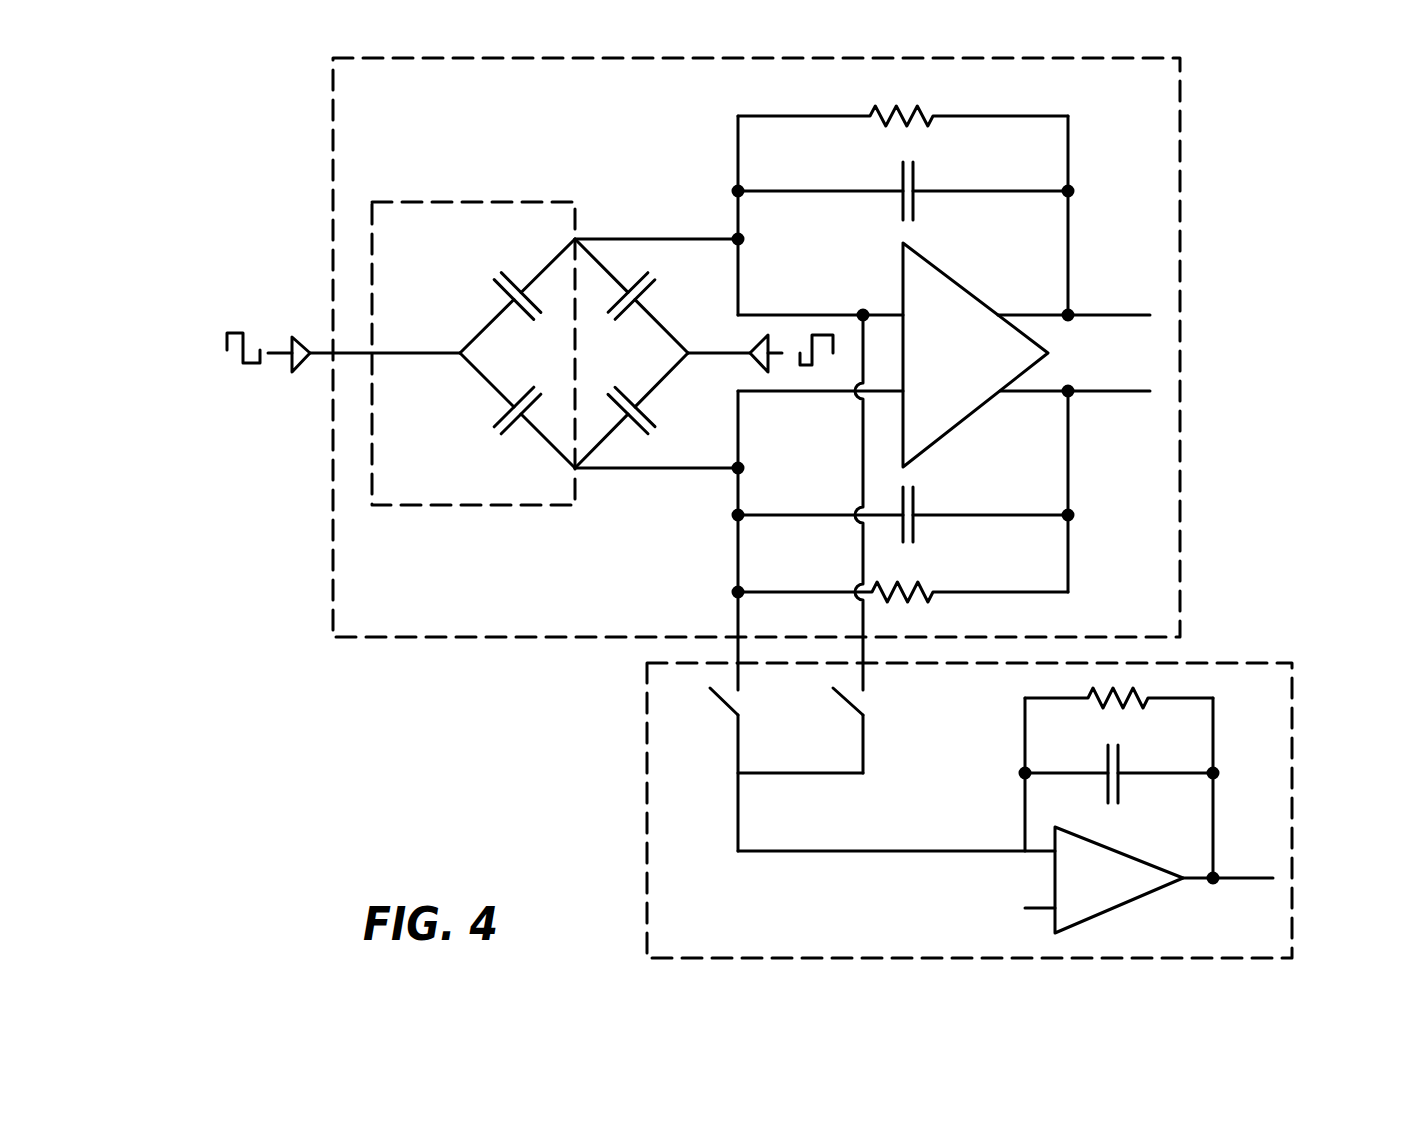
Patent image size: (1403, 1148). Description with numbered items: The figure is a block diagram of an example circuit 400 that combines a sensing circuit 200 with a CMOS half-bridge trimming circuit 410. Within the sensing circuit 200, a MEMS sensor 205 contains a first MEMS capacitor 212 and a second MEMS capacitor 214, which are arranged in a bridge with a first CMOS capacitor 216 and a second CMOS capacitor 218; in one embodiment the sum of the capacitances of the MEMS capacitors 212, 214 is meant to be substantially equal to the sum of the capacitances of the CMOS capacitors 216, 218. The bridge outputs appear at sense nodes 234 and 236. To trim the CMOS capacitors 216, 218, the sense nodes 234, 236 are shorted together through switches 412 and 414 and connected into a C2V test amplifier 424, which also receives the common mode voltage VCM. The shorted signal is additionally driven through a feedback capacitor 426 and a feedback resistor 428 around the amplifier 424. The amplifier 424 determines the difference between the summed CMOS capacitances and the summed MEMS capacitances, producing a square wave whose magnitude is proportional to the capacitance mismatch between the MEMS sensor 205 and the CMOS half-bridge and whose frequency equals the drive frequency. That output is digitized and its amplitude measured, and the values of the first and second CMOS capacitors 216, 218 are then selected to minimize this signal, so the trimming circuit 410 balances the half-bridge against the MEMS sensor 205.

The circuit 400 is at (280, 69).
The circuit 200 is at (1180, 200).
The MEMS sensor 205 is at (523, 200).
The first MEMS capacitor 212 is at (497, 281).
The second MEMS capacitor 214 is at (500, 417).
The first CMOS capacitor 216 is at (650, 283).
The second CMOS capacitor 218 is at (652, 422).
The sense node 234 is at (817, 277).
The sense node 236 is at (817, 444).
The CMOS half-bridge trimming circuit 410 is at (1292, 710).
The switch 412 is at (723, 705).
The switch 414 is at (858, 710).
The C2V test amplifier 424 is at (1142, 898).
The capacitor 426 is at (1120, 787).
The resistor 428 is at (1117, 708).